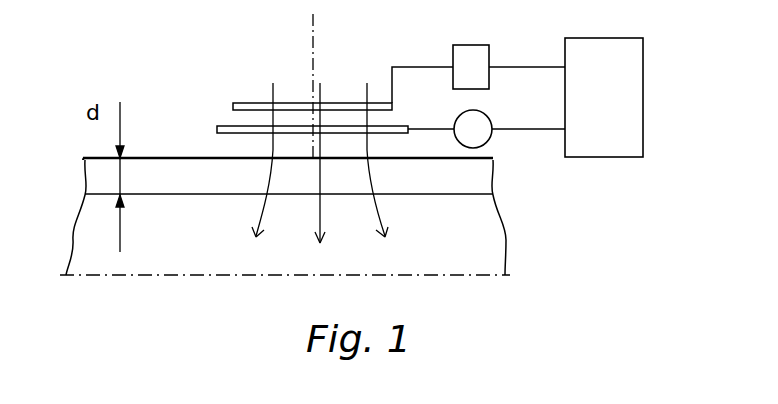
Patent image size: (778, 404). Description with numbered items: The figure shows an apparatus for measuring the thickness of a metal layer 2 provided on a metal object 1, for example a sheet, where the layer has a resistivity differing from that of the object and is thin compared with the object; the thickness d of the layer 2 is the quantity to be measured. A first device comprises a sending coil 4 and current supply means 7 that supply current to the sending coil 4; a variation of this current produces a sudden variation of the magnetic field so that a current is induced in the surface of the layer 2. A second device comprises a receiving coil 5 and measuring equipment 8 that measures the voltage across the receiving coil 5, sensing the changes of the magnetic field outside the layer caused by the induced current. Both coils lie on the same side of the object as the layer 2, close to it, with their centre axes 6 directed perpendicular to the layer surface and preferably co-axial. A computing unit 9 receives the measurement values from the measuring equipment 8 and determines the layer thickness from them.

The metal object 1 is at (490, 233).
The metal layer 2 is at (482, 181).
The sending coil 4 is at (250, 102).
The receiving coil 5 is at (225, 125).
The centre axes 6 is at (313, 14).
The current supply means 7 is at (487, 86).
The measuring equipment 8 is at (460, 113).
The computing unit 9 is at (633, 82).